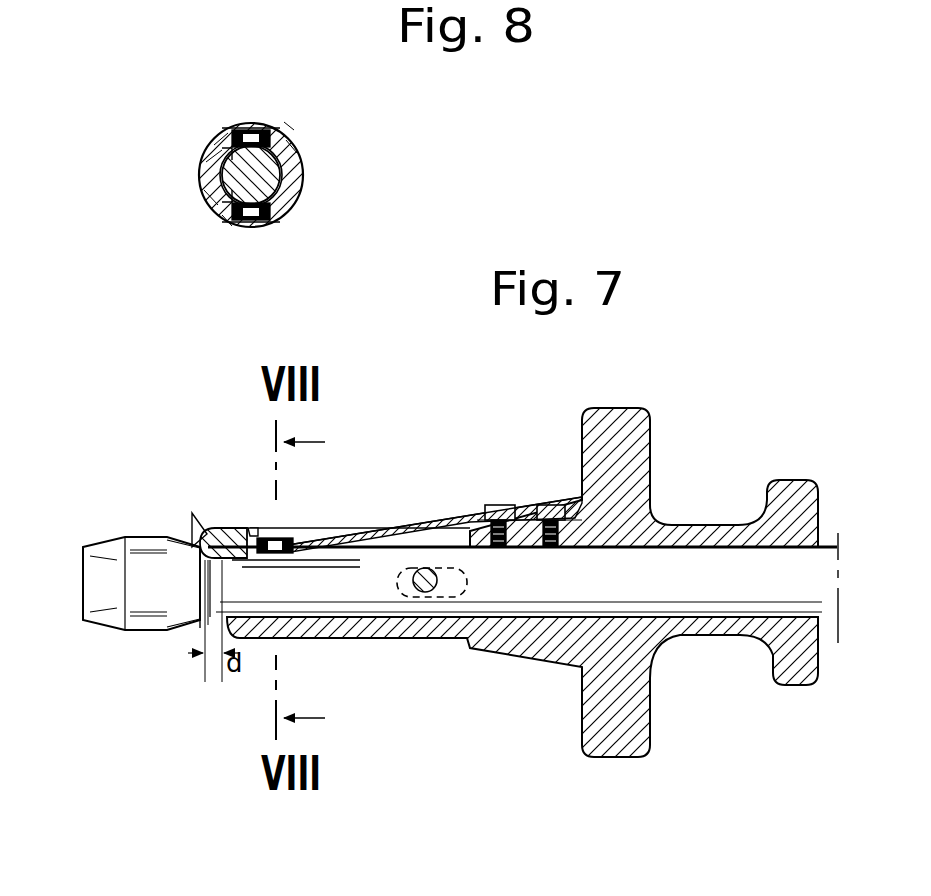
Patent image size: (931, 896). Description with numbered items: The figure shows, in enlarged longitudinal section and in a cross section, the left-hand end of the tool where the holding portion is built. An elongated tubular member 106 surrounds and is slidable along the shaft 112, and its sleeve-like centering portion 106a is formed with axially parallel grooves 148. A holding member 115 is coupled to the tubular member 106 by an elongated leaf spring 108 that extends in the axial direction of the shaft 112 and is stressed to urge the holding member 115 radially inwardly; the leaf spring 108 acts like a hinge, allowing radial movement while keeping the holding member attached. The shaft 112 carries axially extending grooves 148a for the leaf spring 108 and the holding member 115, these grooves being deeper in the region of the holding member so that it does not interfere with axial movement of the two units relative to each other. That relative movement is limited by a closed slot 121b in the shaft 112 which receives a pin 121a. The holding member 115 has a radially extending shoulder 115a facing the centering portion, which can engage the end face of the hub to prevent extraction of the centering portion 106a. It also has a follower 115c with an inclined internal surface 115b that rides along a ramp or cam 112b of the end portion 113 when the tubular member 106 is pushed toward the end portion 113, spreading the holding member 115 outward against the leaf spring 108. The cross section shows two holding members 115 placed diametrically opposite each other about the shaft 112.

In FIG. 7, the elongated tubular member 106 is at (628, 660).
In FIG. 8, the sleeve-like centering portion 106a is at (280, 143).
In FIG. 8, the leaf spring 108 is at (232, 128).
In FIG. 7, the leaf spring 108 is at (420, 528).
In FIG. 8, the shaft 112 is at (260, 228).
In FIG. 7, the shaft 112 is at (772, 572).
In FIG. 7, the ramp or cam 112b is at (184, 540).
In FIG. 7, the end portion 113 is at (160, 600).
In FIG. 7, the holding member 115 is at (210, 533).
In FIG. 7, the radially extending shoulder 115a is at (255, 532).
In FIG. 7, the inclined internal surface 115b is at (208, 628).
In FIG. 7, the follower 115c is at (188, 515).
In FIG. 7, the pin 121a is at (430, 597).
In FIG. 7, the closed slot 121b is at (448, 598).
In FIG. 8, the axially parallel groove 148 is at (258, 128).
In FIG. 7, the axially parallel groove 148 is at (462, 515).
In FIG. 8, the axially extending groove 148a is at (220, 187).
In FIG. 7, the axially extending groove 148a is at (300, 560).